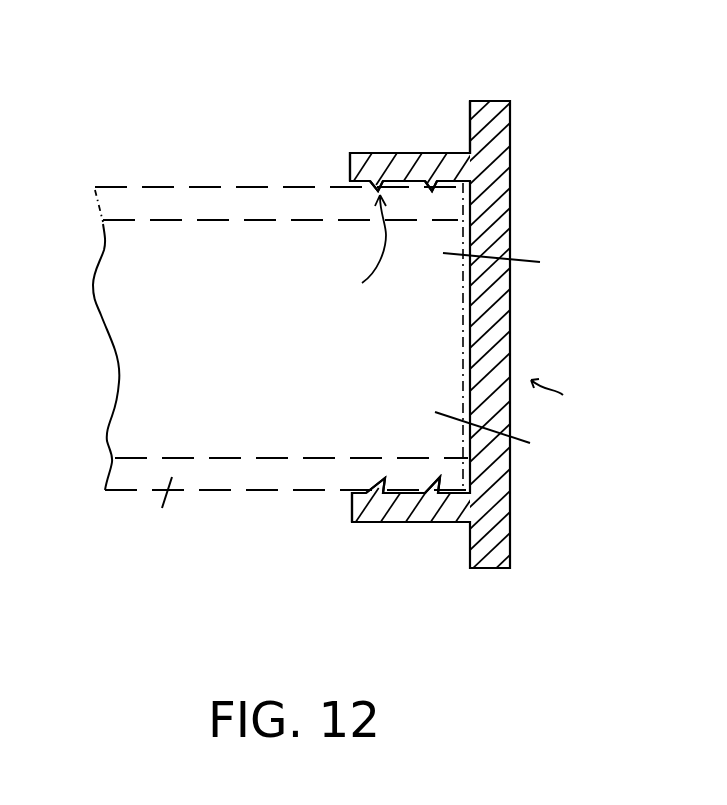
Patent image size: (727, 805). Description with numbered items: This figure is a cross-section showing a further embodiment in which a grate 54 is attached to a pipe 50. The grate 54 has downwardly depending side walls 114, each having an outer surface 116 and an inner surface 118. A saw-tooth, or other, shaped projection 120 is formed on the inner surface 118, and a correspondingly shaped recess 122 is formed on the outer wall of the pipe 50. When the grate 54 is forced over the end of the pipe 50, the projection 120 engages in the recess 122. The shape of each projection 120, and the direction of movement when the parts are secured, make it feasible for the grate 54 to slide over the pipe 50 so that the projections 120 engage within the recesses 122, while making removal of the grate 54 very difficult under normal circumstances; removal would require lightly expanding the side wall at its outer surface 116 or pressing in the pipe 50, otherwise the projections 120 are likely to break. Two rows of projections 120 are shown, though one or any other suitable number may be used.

The pipe 50 is at (137, 194).
The grate 54 is at (500, 200).
The side walls 114 is at (381, 152).
The outer surface 116 is at (430, 152).
The inner surface 118 is at (407, 187).
The projection 120 is at (370, 184).
The recess 122 is at (378, 482).